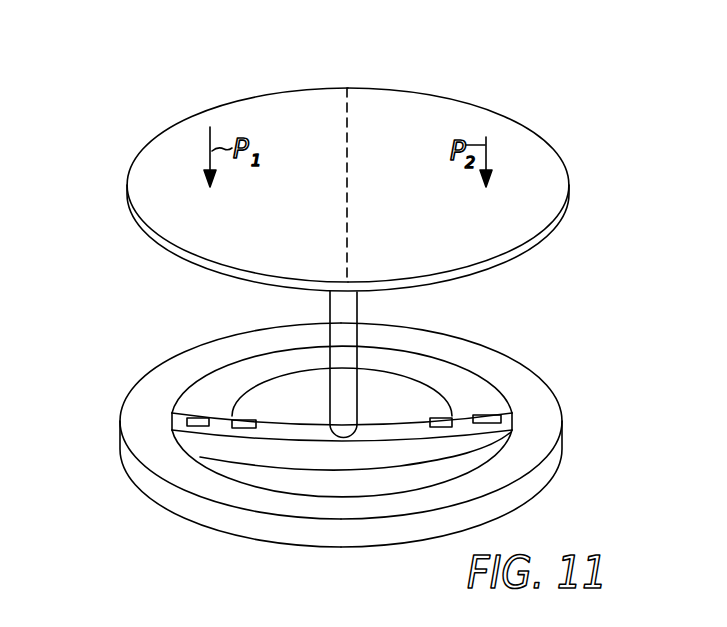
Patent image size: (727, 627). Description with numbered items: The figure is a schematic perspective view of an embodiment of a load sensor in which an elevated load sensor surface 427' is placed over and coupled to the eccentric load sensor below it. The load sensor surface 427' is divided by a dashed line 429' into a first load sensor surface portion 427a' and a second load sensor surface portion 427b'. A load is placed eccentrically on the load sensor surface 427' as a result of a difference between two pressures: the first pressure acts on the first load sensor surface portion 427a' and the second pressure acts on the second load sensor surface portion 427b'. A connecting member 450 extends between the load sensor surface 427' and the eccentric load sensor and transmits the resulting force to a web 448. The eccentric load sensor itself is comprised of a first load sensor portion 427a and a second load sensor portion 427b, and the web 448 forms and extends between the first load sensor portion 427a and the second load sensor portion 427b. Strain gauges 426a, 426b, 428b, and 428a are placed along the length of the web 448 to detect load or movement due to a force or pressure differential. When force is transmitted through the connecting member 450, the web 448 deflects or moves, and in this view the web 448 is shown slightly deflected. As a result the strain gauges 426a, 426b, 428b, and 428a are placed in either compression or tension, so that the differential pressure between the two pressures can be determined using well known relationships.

The load sensor surface 427' is at (348, 173).
The first load sensor surface portion 427a' is at (203, 185).
The second load sensor surface portion 427b' is at (506, 185).
The dashed line 429' is at (389, 185).
The connecting member 450 is at (358, 313).
The web 448 is at (306, 400).
The strain gauge 426a is at (195, 417).
The strain gauge 426b is at (236, 418).
The strain gauge 428a is at (504, 415).
The strain gauge 428b is at (436, 416).
The first load sensor portion 427a is at (187, 435).
The second load sensor portion 427b is at (503, 435).